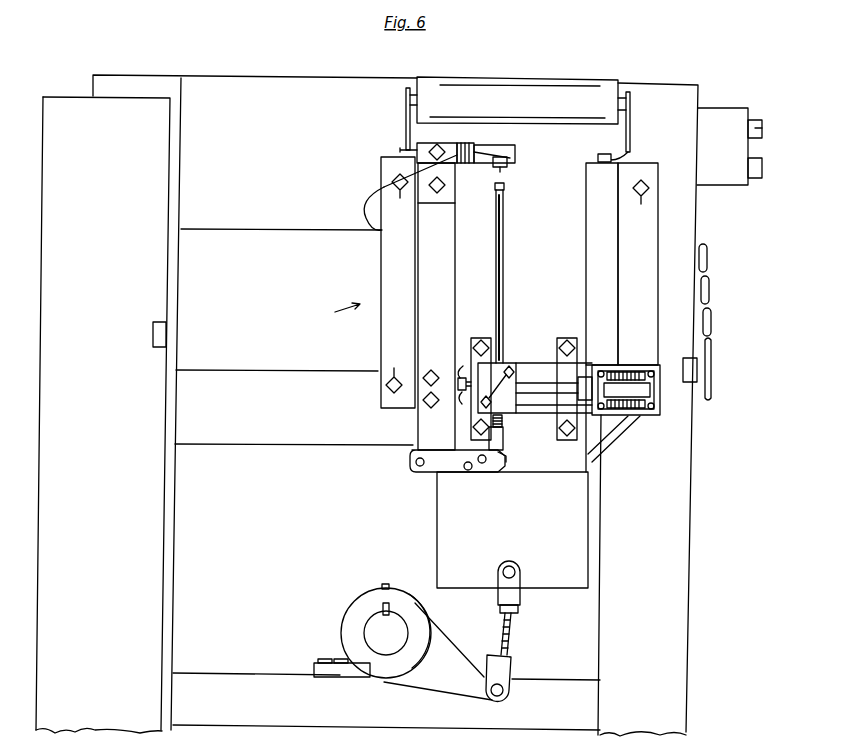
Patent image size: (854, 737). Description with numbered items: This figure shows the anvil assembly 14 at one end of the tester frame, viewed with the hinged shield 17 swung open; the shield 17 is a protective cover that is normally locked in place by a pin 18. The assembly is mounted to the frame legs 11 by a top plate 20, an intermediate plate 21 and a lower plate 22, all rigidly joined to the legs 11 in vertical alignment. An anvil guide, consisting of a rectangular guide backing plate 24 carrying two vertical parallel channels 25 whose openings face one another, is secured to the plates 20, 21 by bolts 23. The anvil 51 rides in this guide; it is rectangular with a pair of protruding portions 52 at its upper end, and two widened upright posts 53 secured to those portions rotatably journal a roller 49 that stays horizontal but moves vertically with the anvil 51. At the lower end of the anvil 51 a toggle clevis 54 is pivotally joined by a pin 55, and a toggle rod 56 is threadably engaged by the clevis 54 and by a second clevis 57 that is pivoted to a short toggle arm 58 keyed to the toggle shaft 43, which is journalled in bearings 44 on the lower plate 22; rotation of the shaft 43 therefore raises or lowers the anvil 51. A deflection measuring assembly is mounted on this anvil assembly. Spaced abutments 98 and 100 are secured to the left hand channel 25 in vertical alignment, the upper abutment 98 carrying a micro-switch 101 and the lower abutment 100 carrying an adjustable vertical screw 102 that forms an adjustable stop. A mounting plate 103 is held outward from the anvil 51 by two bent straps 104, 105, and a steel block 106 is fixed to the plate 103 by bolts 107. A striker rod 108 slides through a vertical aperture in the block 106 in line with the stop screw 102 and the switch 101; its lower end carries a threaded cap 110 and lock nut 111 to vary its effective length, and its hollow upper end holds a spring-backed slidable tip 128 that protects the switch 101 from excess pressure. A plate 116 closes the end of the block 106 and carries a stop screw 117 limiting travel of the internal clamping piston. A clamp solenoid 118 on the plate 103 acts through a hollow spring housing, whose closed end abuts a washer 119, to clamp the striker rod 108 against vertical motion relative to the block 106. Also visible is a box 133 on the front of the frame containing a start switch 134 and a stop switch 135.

The legs 11 is at (686, 605).
The anvil assembly 14 is at (335, 314).
The shield 17 is at (103, 415).
The pin 18 is at (712, 368).
The top plate 20 is at (281, 192).
The intermediate plate 21 is at (294, 407).
The lower plate 22 is at (386, 692).
The bolts 23 is at (564, 374).
The guide backing plate 24 is at (519, 282).
The channels 25 is at (517, 307).
The toggle shaft 43 is at (386, 631).
The bearings 44 is at (342, 661).
The roller 49 is at (618, 84).
The anvil 51 is at (455, 192).
The protruding portions 52 is at (400, 150).
The upright posts 53 is at (406, 107).
The toggle clevis 54 is at (518, 608).
The pin 55 is at (520, 565).
The toggle rod 56 is at (508, 635).
The second clevis 57 is at (511, 665).
The toggle arm 58 is at (438, 651).
The upper abutment 98 is at (515, 150).
The lower abutment 100 is at (458, 472).
The micro-switch 101 is at (507, 166).
The adjustable vertical screw 102 is at (506, 462).
The mounting plate 103 is at (528, 363).
The bent strap 104 is at (476, 338).
The bent strap 105 is at (566, 338).
The steel block 106 is at (516, 410).
The bolts 107 is at (497, 388).
The striker rod 108 is at (504, 240).
The threaded cap 110 is at (503, 440).
The lock nut 111 is at (502, 421).
The plate 116 is at (462, 406).
The stop screw 117 is at (462, 369).
The clamp solenoid 118 is at (630, 365).
The washer 119 is at (522, 386).
The slidable tip 128 is at (494, 186).
The box 133 is at (722, 108).
The start switch 134 is at (762, 132).
The stop switch 135 is at (755, 178).